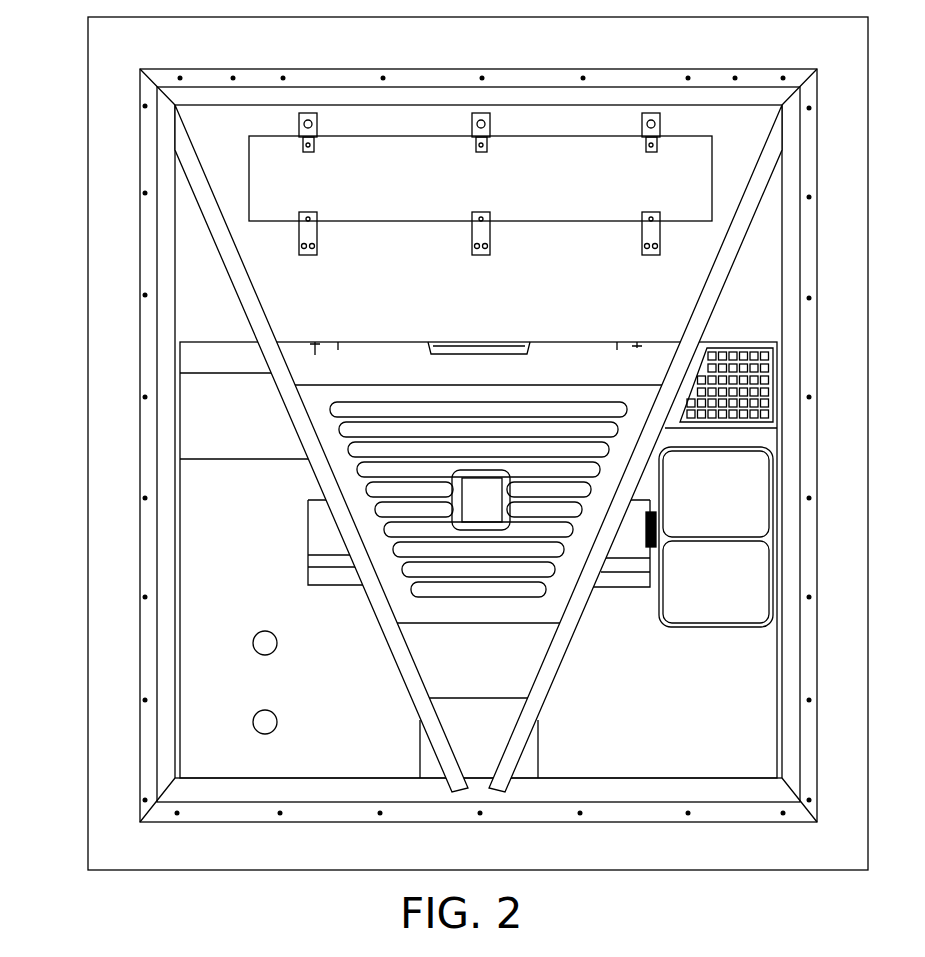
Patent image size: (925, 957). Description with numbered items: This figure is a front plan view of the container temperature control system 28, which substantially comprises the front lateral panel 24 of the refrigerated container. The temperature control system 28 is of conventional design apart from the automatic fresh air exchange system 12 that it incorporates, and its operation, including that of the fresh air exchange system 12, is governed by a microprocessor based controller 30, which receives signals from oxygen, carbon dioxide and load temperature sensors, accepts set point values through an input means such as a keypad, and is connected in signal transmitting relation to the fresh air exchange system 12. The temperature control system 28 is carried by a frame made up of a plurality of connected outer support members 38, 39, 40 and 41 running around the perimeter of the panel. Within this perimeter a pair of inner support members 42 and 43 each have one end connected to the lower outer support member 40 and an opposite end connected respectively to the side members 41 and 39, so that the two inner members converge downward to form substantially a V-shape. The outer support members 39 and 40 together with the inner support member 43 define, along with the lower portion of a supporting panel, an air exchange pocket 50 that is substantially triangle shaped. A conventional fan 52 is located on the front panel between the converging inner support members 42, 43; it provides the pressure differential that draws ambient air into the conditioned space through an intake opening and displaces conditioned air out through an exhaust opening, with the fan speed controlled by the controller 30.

The fresh air exchange system 12 is at (755, 305).
The front lateral panel 24 is at (290, 848).
The temperature control system 28 is at (252, 609).
The microprocessor based controller 30 is at (722, 613).
The outer support member 38 is at (527, 107).
The outer support member 39 is at (787, 581).
The outer support member 40 is at (542, 793).
The outer support member 41 is at (163, 613).
The inner support member 42 is at (243, 272).
The inner support member 43 is at (708, 295).
The air exchange pocket 50 is at (628, 684).
The fan 52 is at (487, 598).